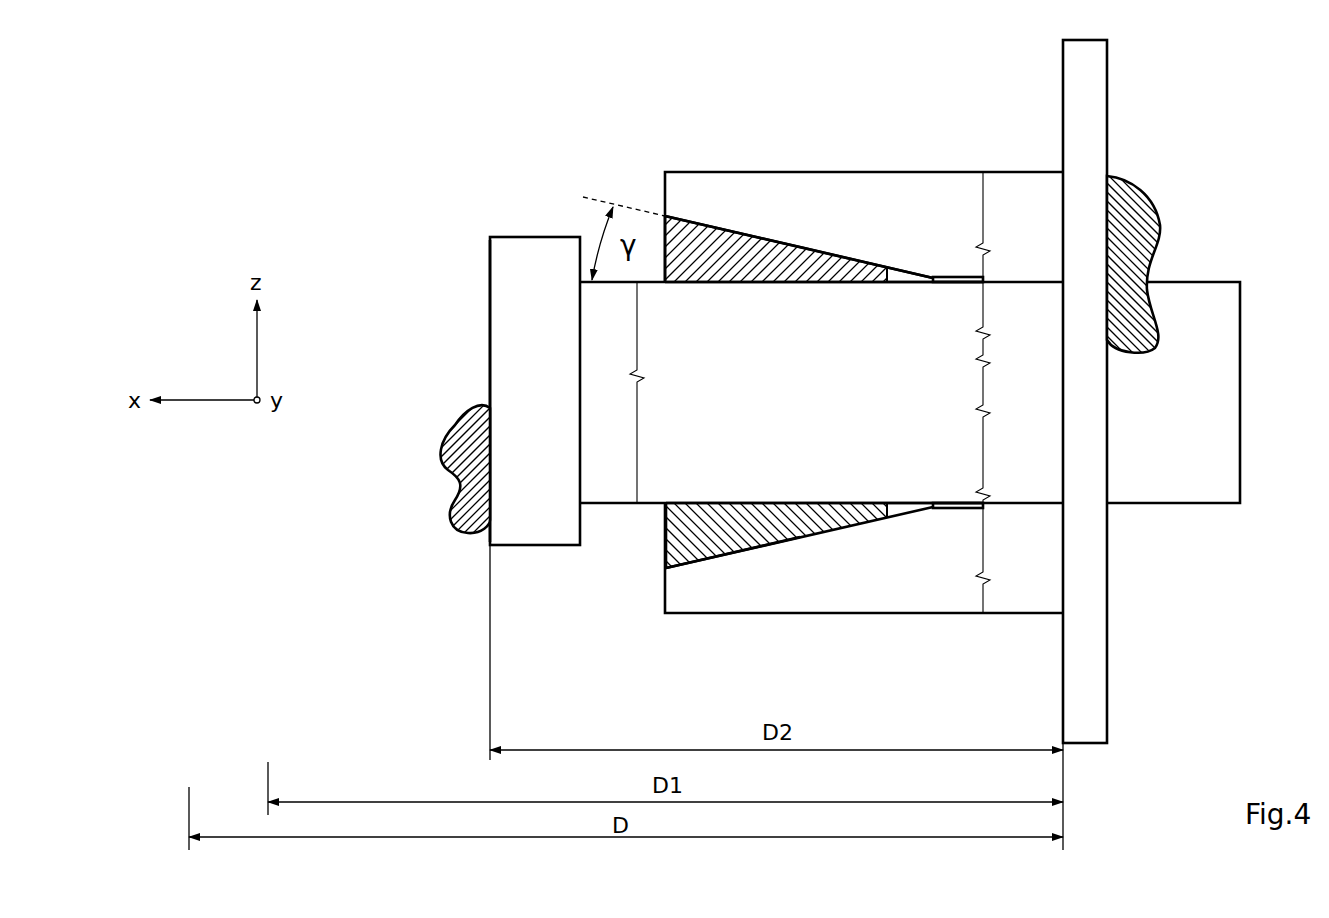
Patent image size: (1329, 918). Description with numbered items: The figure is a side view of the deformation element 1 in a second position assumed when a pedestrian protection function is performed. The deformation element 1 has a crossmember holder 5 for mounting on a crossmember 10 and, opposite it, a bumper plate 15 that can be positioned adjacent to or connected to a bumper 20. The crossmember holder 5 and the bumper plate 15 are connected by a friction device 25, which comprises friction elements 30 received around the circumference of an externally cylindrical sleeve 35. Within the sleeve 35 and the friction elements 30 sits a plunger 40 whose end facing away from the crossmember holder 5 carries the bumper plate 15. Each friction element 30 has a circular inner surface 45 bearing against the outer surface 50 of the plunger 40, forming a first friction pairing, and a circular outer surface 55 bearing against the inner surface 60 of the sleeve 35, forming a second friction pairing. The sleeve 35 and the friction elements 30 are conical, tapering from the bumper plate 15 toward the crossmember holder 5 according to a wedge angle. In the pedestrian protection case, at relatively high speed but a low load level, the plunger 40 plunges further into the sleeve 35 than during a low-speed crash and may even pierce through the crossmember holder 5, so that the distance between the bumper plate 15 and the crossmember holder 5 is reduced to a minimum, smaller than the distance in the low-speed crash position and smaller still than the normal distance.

The deformation element 1 is at (448, 278).
The crossmember holder 5 is at (1083, 158).
The crossmember 10 is at (1132, 232).
The bumper plate 15 is at (488, 385).
The bumper 20 is at (452, 465).
The friction device 25 is at (658, 558).
The friction element 30 is at (727, 508).
The sleeve 35 is at (917, 240).
The plunger 40 is at (540, 315).
The inner surface of friction element 45 is at (837, 283).
The outer surface of plunger 50 is at (774, 506).
The outer surface of friction element 55 is at (745, 533).
The inner surface of sleeve 60 is at (828, 254).